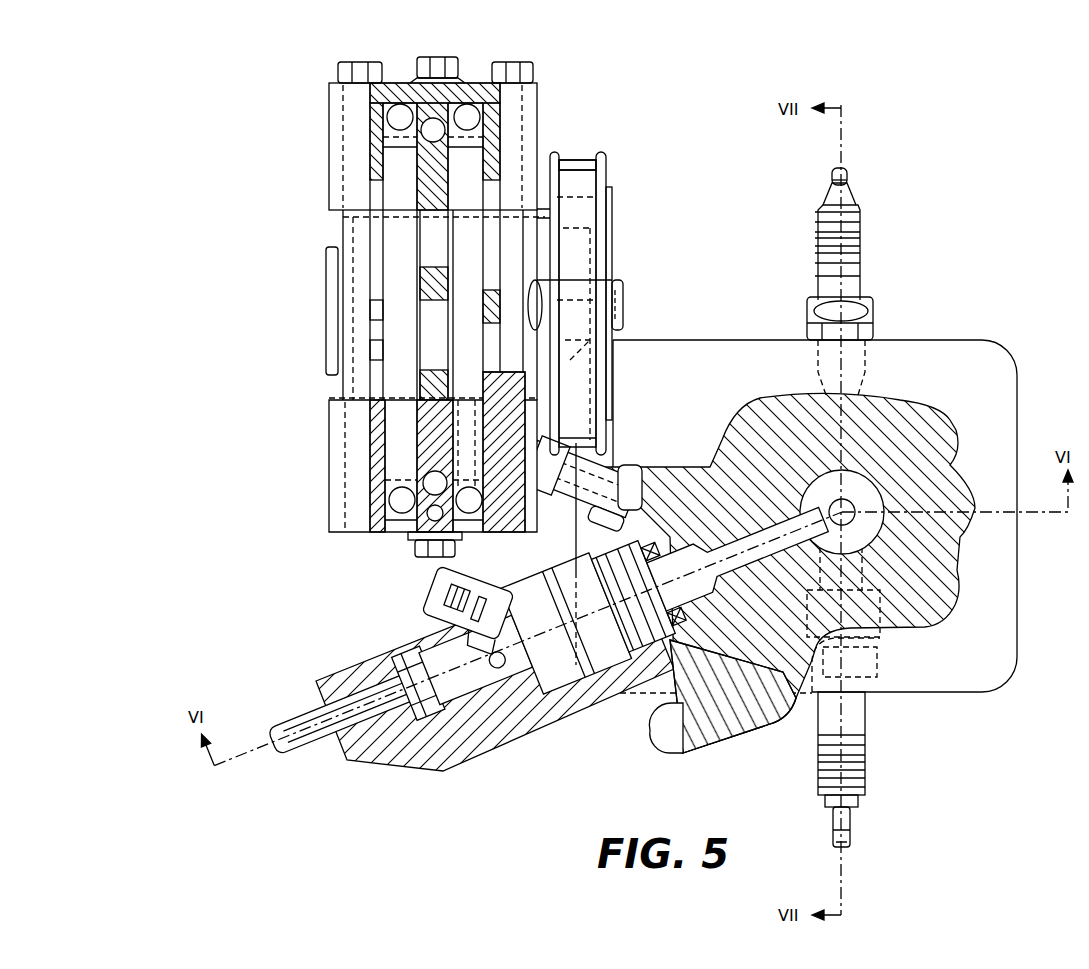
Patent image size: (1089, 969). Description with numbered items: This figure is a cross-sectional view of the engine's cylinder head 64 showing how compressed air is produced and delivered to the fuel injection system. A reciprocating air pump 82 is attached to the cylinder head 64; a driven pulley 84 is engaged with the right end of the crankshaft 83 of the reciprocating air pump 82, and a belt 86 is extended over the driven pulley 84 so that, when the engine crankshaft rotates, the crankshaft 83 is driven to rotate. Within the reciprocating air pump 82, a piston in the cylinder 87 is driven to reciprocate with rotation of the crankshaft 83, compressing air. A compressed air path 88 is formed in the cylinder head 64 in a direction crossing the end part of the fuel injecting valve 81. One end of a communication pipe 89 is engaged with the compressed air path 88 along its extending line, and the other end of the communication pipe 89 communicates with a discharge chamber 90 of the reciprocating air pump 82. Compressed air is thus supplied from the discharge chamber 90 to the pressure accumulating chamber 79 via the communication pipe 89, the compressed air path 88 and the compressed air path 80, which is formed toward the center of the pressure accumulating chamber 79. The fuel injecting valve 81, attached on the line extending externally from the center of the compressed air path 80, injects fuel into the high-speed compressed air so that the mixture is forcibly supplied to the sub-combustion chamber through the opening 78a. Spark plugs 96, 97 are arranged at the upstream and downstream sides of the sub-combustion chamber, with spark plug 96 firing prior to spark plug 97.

The cylinder head 64 is at (999, 358).
The opening 78a is at (874, 486).
The pressure accumulating chamber 79 is at (850, 497).
The compressed air path 80 is at (768, 530).
The fuel injecting valve 81 is at (567, 620).
The reciprocating air pump 82 is at (337, 232).
The crankshaft 83 is at (620, 306).
The driven pulley 84 is at (606, 162).
The belt 86 is at (569, 160).
The cylinder 87 is at (330, 387).
The compressed air path 88 is at (653, 513).
The communication pipe 89 is at (609, 466).
The discharge chamber 90 is at (463, 402).
The spark plug 96 is at (858, 783).
The spark plug 97 is at (853, 288).